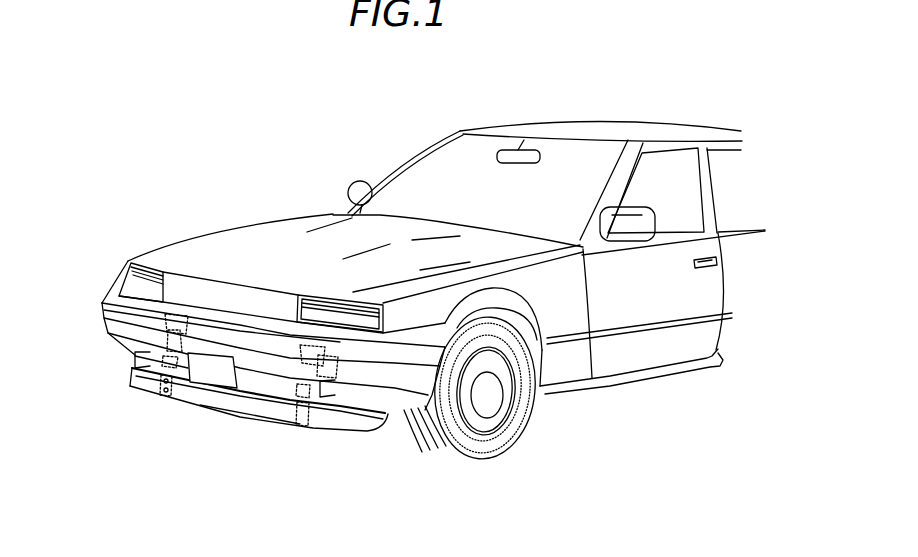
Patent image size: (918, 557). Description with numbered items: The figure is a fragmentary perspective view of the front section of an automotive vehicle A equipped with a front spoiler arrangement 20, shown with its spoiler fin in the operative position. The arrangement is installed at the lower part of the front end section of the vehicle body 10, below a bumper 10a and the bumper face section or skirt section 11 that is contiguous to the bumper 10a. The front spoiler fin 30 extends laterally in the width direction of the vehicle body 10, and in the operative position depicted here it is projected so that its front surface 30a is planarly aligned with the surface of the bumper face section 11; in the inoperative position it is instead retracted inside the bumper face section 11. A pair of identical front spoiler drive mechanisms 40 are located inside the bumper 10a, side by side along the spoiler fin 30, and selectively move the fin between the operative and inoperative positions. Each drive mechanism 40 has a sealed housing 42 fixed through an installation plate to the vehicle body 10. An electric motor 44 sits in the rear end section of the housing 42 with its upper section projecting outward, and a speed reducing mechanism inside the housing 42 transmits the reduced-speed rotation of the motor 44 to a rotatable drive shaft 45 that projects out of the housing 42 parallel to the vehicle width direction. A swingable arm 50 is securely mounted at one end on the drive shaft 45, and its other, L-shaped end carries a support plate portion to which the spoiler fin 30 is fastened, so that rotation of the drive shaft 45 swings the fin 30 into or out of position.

The vehicle body 10 is at (243, 260).
The bumper 10a is at (114, 295).
The bumper face section 11 is at (137, 353).
The front spoiler arrangement 20 is at (220, 425).
The front spoiler fin 30 is at (323, 437).
The front surface of spoiler fin 30a is at (255, 413).
The front spoiler drive mechanism 40 is at (157, 354).
The sealed housing 42 is at (163, 320).
The electric motor 44 is at (168, 316).
The drive shaft 45 is at (166, 392).
The swingable arm 50 is at (162, 392).
The automotive vehicle A is at (322, 210).